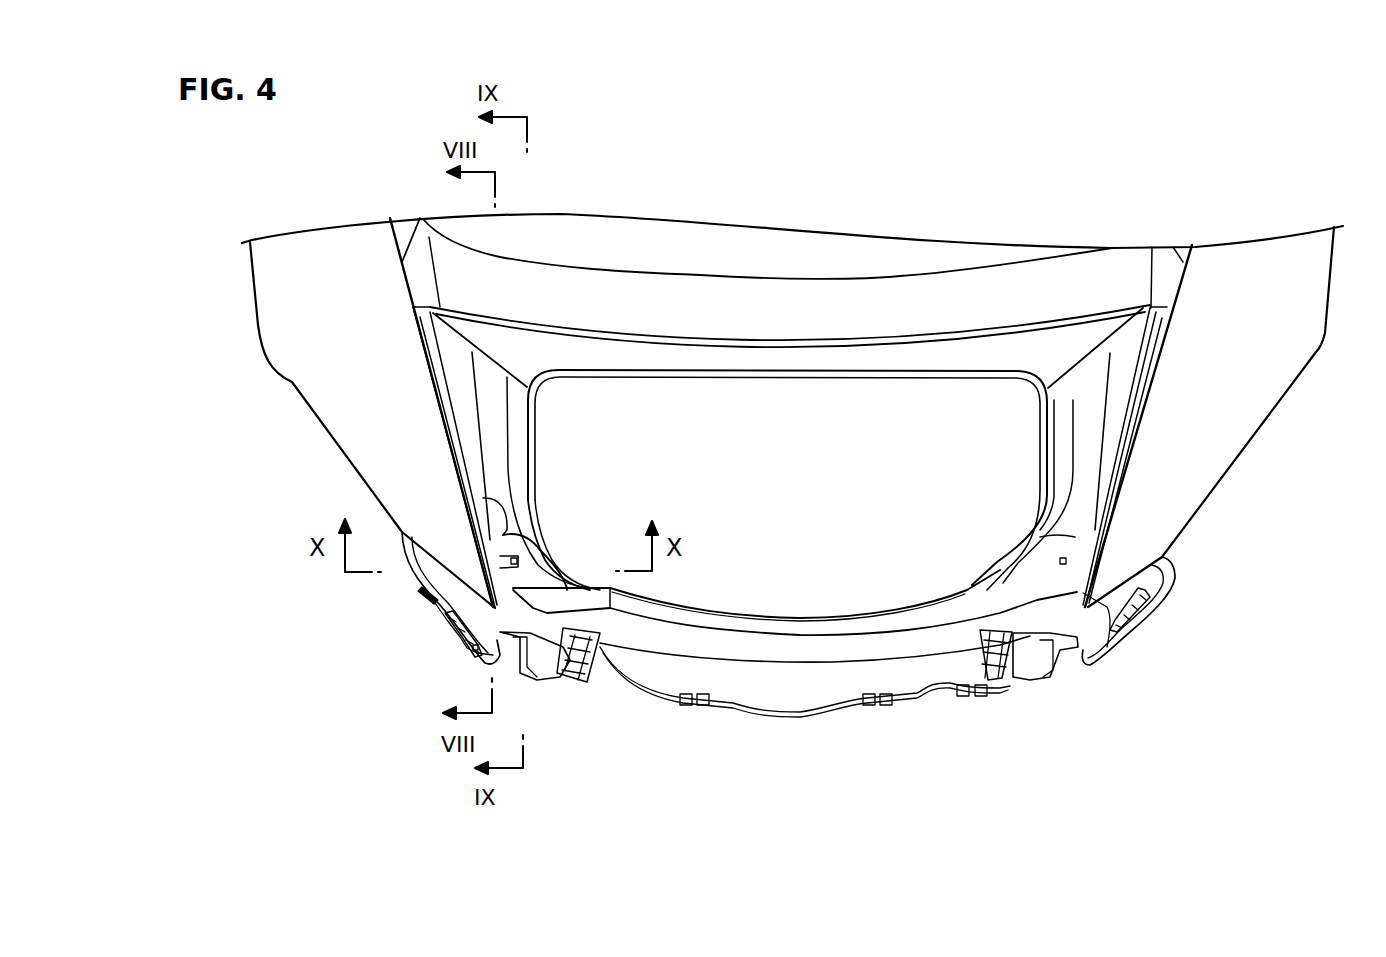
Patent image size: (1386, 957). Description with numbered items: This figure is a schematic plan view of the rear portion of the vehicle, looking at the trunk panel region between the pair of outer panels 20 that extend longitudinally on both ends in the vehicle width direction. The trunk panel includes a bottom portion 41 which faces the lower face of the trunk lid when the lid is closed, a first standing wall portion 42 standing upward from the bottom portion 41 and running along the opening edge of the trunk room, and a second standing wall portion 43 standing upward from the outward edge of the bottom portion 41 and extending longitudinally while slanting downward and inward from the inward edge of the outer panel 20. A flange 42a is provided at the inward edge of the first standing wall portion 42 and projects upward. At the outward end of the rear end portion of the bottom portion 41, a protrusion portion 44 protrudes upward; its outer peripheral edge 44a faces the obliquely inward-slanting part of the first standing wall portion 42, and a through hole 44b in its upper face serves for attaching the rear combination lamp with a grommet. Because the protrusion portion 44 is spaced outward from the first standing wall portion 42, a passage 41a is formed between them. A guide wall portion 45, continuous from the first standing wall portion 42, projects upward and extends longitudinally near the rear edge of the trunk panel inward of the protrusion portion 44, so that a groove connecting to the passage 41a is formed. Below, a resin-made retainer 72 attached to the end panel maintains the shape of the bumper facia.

The outer panel 20 is at (288, 374).
The bottom portion 41 is at (492, 402).
The passage 41a is at (1047, 476).
The first standing wall portion 42 is at (517, 433).
The flange 42a is at (528, 461).
The second standing wall portion 43 is at (463, 400).
The protrusion portion 44 is at (490, 582).
The outer peripheral edge 44a is at (493, 497).
The through hole 44b is at (505, 557).
The guide wall portion 45 is at (593, 580).
The retainer 72 is at (549, 650).